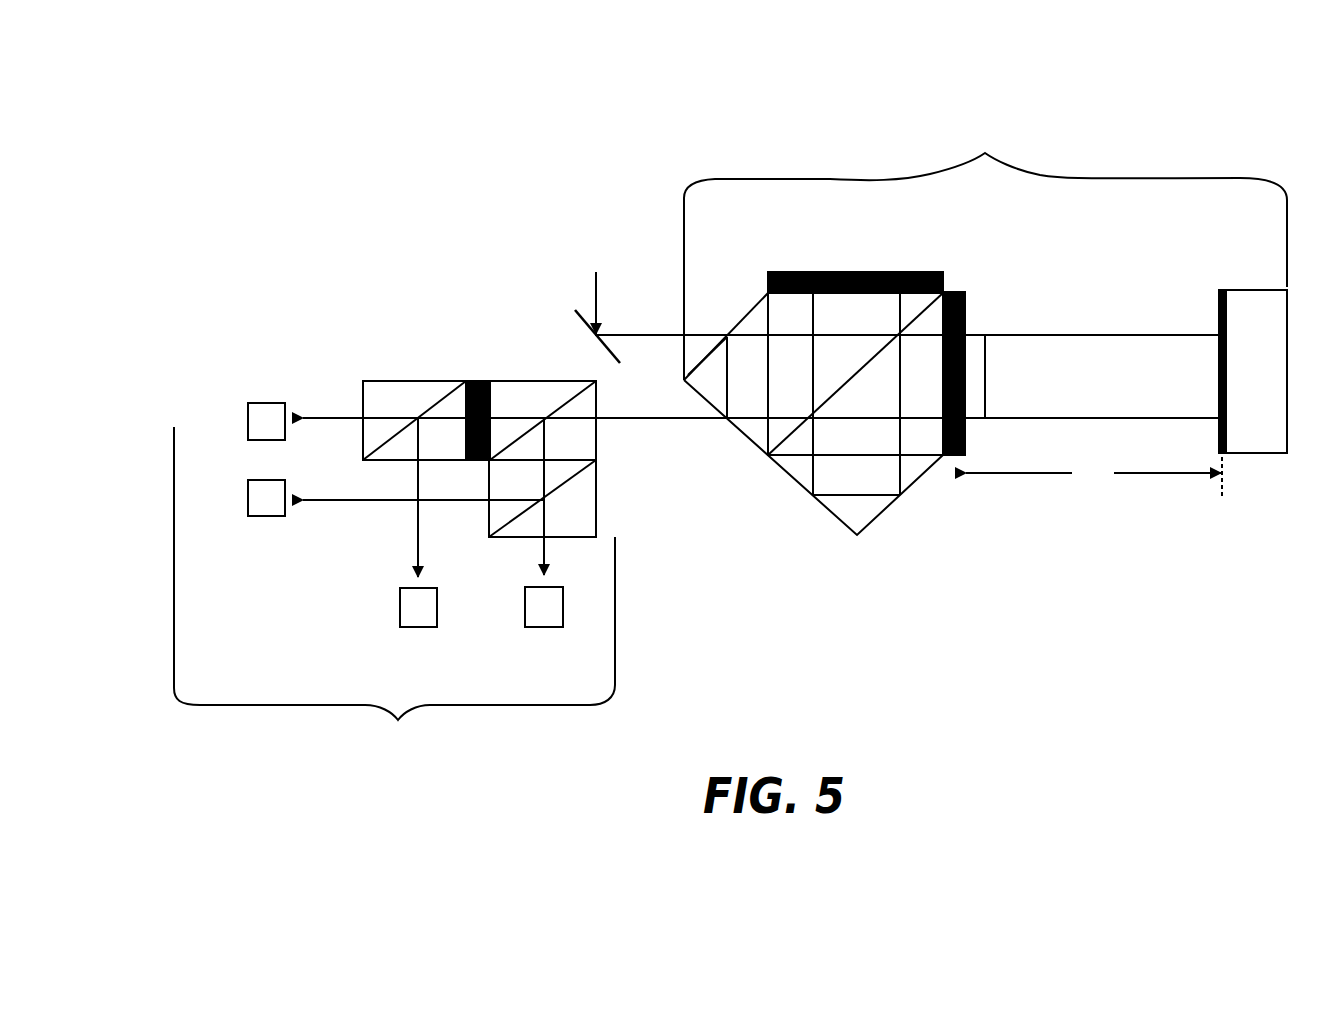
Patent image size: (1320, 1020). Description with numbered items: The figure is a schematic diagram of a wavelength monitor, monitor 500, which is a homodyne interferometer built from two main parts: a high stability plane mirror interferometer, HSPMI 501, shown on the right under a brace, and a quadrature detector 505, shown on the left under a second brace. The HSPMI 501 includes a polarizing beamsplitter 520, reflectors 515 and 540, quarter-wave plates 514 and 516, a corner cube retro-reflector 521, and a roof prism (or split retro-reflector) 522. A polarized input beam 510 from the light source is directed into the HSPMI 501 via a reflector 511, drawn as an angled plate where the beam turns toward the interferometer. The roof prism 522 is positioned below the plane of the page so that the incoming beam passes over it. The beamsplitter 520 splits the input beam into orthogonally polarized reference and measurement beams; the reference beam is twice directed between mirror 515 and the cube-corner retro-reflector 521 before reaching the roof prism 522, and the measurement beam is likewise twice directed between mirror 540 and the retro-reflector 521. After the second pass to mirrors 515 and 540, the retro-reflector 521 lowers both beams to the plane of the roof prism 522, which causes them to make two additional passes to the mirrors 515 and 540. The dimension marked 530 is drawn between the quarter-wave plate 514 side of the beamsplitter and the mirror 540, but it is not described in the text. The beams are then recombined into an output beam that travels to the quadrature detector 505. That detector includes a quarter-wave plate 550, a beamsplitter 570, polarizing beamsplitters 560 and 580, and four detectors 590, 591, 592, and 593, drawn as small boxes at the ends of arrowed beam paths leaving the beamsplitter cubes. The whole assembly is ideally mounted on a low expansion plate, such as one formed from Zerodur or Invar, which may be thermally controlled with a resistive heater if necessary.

The monitor 500 is at (318, 133).
The high stability plane mirror interferometer 501 is at (985, 336).
The quadrature detector 505 is at (417, 545).
The polarized input beam 510 is at (601, 290).
The reflector 511 is at (578, 314).
The quarter-wave plate 514 is at (944, 292).
The reflector 515 is at (878, 272).
The quarter-wave plate 516 is at (950, 455).
The polarizing beamsplitter 520 is at (790, 438).
The corner cube retro-reflector 521 is at (872, 505).
The roof prism 522 is at (752, 427).
The distance 530 is at (1094, 477).
The reflector 540 is at (1253, 288).
The quarter-wave plate 550 is at (480, 381).
The polarizing beamsplitter 560 is at (432, 403).
The beamsplitter 570 is at (560, 380).
The polarizing beamsplitter 580 is at (567, 478).
The detector 590 is at (263, 442).
The detector 591 is at (267, 517).
The detector 592 is at (418, 627).
The detector 593 is at (540, 628).